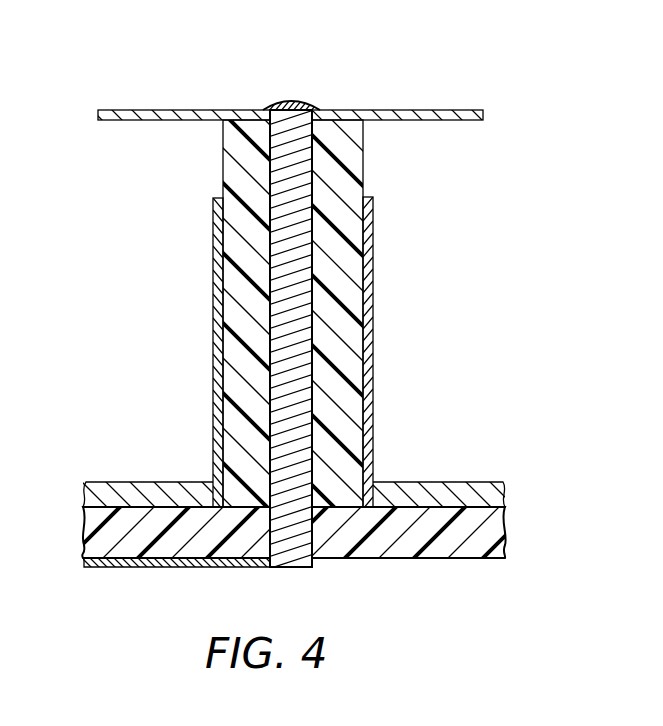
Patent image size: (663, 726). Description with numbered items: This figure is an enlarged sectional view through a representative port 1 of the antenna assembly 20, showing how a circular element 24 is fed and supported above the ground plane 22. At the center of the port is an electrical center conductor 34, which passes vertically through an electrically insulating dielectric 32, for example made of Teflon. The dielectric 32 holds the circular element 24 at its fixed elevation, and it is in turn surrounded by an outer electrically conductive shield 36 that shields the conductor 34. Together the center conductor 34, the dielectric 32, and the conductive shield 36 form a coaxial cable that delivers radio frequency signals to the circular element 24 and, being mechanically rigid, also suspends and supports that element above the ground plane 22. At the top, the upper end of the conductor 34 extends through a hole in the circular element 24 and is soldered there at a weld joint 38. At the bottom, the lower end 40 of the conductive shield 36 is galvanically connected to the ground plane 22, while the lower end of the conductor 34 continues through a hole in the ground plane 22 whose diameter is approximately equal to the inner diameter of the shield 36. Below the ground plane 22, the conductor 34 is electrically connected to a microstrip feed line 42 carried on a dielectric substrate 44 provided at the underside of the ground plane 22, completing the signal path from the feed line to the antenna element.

The fastening assembly 20 is at (86, 67).
The circular element 24 is at (159, 110).
The weld joint 38 is at (293, 103).
The center conductor 34 is at (281, 177).
The dielectric 32 is at (228, 197).
The conductive shield 36 is at (221, 292).
The port 1 is at (383, 332).
The ground plane 22 is at (108, 483).
The lower end of the conductive shield 40 is at (218, 490).
The microstrip feed line 42 is at (252, 567).
The dielectric substrate 44 is at (367, 550).